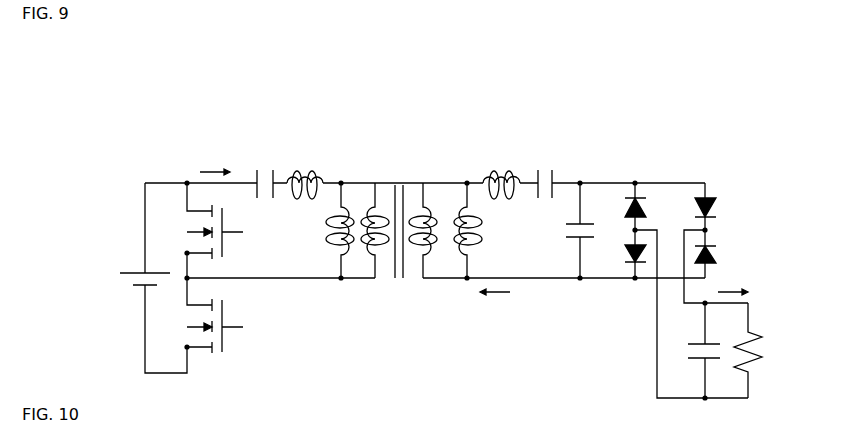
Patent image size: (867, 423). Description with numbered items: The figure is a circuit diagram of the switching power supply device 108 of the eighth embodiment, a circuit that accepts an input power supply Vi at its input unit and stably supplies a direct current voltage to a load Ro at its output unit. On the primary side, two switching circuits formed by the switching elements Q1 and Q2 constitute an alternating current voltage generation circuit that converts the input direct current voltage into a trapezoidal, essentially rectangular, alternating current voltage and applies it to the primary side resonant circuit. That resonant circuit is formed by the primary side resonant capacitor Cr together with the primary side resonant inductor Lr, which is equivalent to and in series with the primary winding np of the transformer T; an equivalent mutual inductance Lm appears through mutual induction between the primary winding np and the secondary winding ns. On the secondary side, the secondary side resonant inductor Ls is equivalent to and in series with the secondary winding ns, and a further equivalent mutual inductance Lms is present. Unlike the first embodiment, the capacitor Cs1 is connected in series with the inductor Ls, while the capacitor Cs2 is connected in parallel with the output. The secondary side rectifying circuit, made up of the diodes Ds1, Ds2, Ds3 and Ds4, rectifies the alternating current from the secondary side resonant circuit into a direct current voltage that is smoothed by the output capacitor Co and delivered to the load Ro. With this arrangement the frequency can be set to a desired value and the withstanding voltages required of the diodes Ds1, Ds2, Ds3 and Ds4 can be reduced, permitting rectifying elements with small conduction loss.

The switching power supply device 108 is at (760, 143).
The input power supply Vi is at (149, 278).
The switching element Q1 is at (216, 315).
The switching element Q2 is at (216, 230).
The primary side resonant capacitor Cr is at (264, 173).
The primary side resonant inductor Lr is at (305, 173).
The equivalent mutual inductance Lm is at (324, 230).
The primary winding np is at (371, 218).
The transformer T is at (398, 218).
The secondary winding ns is at (456, 218).
The equivalent mutual inductance Lms is at (460, 230).
The secondary side resonant inductor Ls is at (501, 172).
The secondary side resonant capacitor Cs1 is at (543, 171).
The secondary side resonant capacitor Cs2 is at (563, 230).
The diode Ds1 is at (716, 206).
The diode Ds2 is at (716, 254).
The diode Ds3 is at (618, 254).
The diode Ds4 is at (618, 206).
The output capacitor Co is at (695, 350).
The load Ro is at (738, 350).